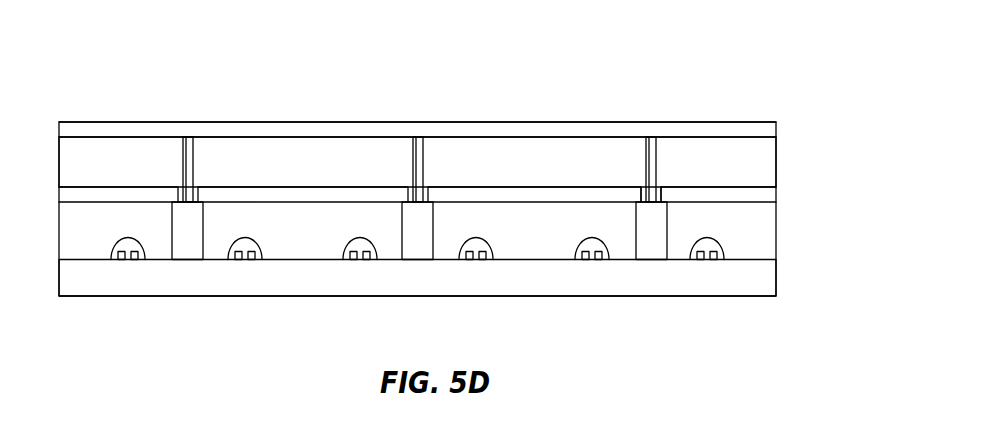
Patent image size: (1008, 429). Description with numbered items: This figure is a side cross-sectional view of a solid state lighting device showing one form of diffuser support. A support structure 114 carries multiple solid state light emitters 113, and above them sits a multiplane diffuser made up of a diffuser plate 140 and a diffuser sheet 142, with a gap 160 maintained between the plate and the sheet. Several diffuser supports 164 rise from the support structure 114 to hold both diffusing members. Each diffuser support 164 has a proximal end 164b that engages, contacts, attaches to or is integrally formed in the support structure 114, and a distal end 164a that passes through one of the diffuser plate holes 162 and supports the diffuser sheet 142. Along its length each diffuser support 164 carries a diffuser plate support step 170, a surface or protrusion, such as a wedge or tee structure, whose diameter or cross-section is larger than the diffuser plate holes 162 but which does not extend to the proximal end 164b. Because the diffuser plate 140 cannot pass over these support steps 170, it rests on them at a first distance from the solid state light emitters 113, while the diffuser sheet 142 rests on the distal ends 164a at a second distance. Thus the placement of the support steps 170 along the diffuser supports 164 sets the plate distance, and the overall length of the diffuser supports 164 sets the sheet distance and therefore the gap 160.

The solid state light emitters 113 is at (488, 250).
The support structure 114 is at (750, 278).
The diffuser plate 140 is at (777, 195).
The diffuser sheet 142 is at (767, 129).
The gap 160 is at (777, 167).
The diffuser plate holes 162 is at (642, 188).
The diffuser supports 164 is at (380, 199).
The distal end 164a is at (191, 137).
The proximal end 164b is at (190, 257).
The diffuser plate support steps 170 is at (193, 204).